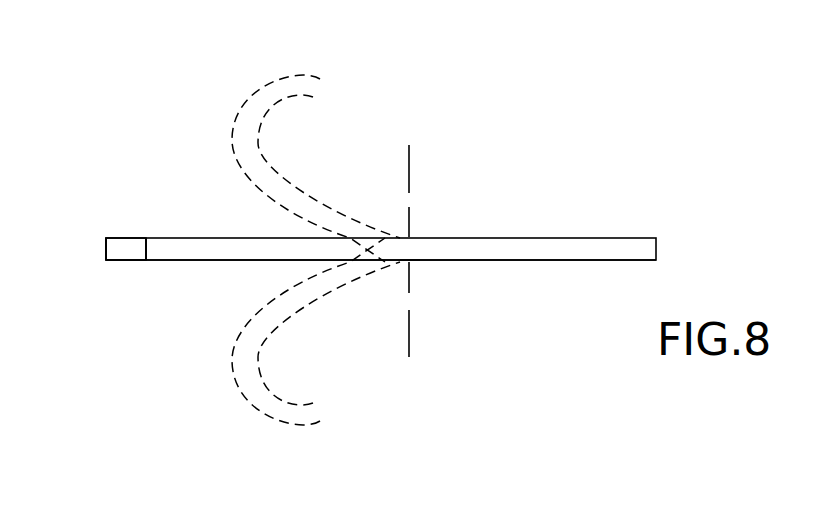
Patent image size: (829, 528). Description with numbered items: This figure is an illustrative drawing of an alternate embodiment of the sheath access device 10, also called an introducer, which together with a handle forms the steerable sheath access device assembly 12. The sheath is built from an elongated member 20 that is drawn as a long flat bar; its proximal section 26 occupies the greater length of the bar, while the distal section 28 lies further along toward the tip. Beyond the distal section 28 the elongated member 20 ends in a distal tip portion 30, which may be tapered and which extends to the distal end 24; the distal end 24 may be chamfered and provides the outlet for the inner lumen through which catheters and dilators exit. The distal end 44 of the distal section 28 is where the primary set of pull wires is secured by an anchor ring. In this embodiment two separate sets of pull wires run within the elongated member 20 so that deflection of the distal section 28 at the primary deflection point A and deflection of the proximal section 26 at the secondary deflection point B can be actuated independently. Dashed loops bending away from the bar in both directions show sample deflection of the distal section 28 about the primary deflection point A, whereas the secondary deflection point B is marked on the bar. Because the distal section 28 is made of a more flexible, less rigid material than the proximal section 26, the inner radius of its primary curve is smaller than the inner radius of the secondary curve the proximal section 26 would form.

The sheath access device 10 is at (123, 115).
The steerable sheath access device assembly 12 is at (395, 156).
The elongated member 20 is at (570, 138).
The distal end 24 is at (107, 261).
The proximal section 26 is at (533, 261).
The distal section 28 is at (157, 261).
The distal tip portion 30 is at (122, 237).
The distal end of distal section 44 is at (147, 237).
The primary deflection point A is at (322, 82).
The secondary deflection point B is at (411, 263).